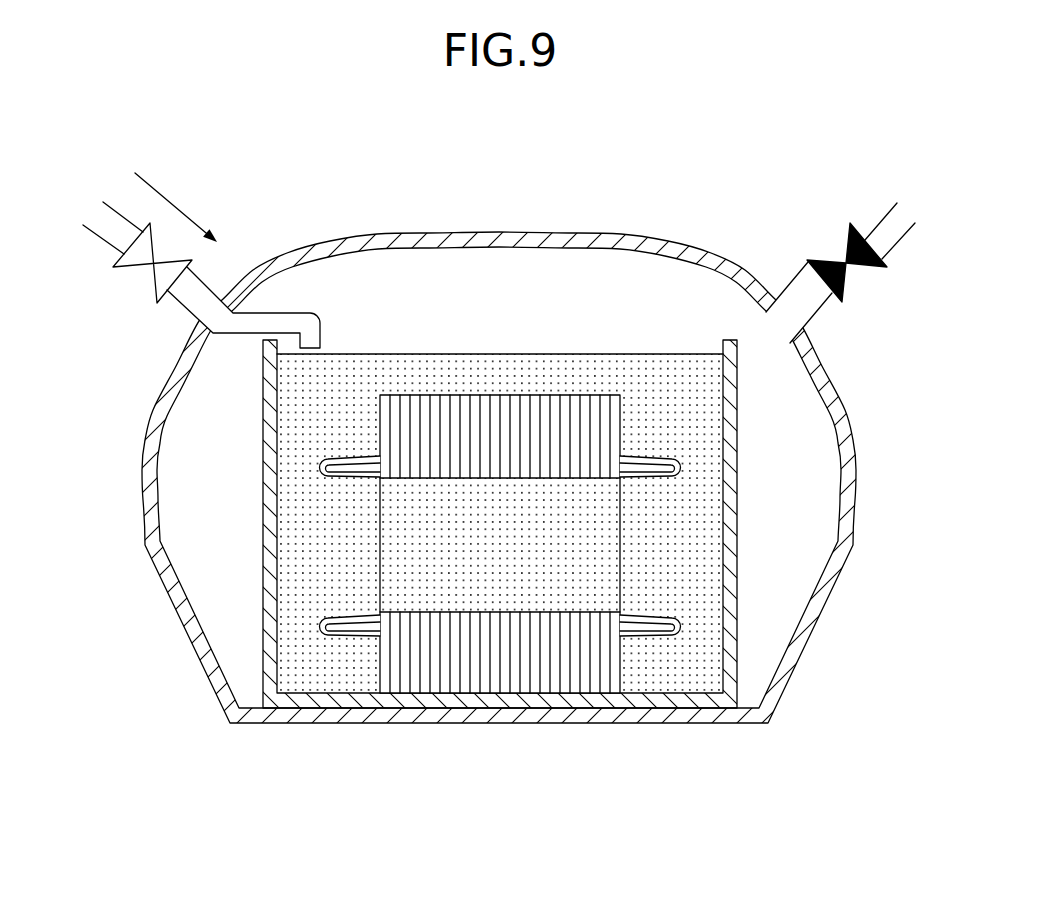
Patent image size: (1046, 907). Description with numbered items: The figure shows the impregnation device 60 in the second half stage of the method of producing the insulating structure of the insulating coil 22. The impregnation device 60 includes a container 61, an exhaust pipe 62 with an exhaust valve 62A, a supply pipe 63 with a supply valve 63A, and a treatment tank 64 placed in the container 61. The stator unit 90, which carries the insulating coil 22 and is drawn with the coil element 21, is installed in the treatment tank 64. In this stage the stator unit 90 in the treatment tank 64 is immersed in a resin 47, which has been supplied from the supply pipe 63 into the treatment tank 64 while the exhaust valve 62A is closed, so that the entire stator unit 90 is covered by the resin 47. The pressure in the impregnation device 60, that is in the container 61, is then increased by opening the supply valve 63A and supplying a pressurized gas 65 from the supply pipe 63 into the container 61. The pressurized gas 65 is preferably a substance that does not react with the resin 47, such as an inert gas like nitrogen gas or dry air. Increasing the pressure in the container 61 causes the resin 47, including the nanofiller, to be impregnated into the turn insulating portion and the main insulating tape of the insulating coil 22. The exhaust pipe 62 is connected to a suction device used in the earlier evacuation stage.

The impregnation device 60 is at (316, 169).
The container 61 is at (857, 466).
The pressurized gas 65 is at (416, 272).
The supply pipe 63 is at (104, 241).
The supply valve 63A is at (155, 286).
The exhaust pipe 62 is at (900, 242).
The exhaust valve 62A is at (847, 285).
The treatment tank 64 is at (738, 605).
The resin 47 is at (500, 353).
The stator unit 90 is at (578, 378).
The coil 21 is at (378, 668).
The insulating coil 22 is at (352, 612).